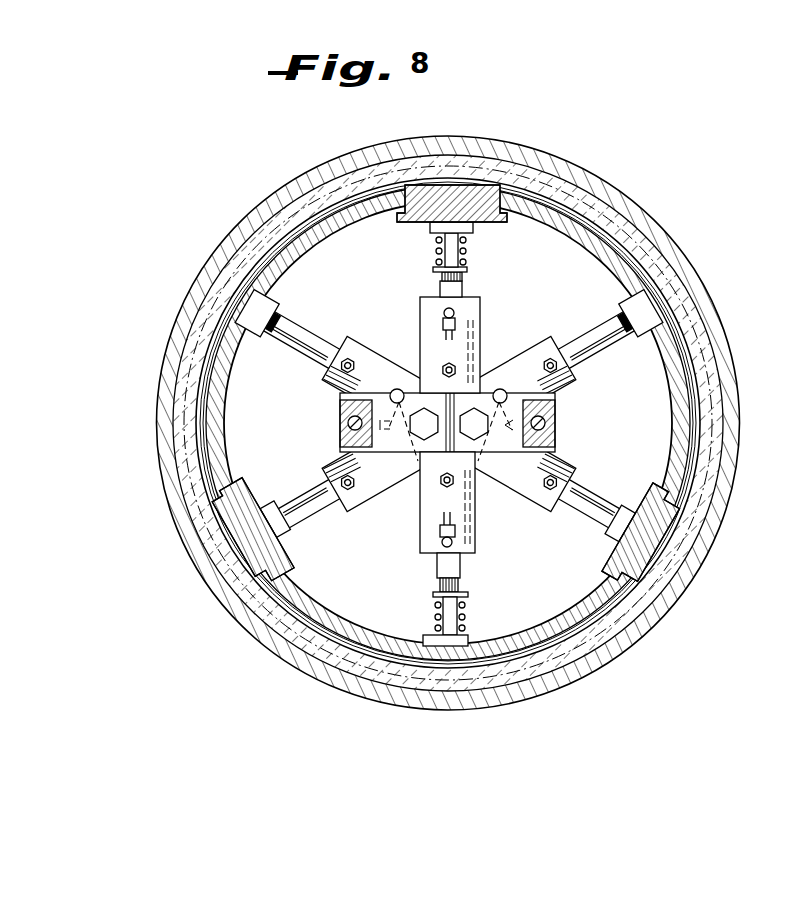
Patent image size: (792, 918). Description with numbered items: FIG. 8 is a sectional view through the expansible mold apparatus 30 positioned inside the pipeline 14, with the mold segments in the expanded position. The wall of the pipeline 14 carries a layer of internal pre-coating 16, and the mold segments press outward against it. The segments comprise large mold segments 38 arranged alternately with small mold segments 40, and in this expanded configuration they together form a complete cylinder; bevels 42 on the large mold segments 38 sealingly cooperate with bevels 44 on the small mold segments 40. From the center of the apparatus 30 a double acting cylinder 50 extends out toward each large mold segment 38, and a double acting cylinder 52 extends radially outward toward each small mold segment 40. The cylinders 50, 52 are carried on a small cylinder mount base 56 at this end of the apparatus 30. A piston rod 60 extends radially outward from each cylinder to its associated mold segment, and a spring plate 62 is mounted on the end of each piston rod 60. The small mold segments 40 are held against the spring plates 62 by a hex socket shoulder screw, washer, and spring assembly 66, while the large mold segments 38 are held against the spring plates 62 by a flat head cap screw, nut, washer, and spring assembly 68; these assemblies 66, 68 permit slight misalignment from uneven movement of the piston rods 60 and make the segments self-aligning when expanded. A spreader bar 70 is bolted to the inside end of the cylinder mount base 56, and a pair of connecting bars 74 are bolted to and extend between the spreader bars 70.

The pipeline 14 is at (212, 582).
The internal pre-coating 16 is at (673, 580).
The expansible mold apparatus 30 is at (578, 150).
The large mold segment 38 is at (623, 217).
The small mold segment 40 is at (468, 190).
The bevel 42 is at (680, 528).
The bevel 44 is at (667, 597).
The double acting cylinder 50 is at (568, 394).
The double acting cylinder 52 is at (420, 308).
The small cylinder mount base 56 is at (467, 458).
The piston rod 60 is at (300, 522).
The spring plate 62 is at (253, 320).
The hex socket shoulder screw, washer, and spring assembly 66 is at (441, 260).
The flat head cap screw, nut, washer, and spring assembly 68 is at (428, 620).
The spreader bar 70 is at (515, 440).
The connecting bar 74 is at (553, 438).